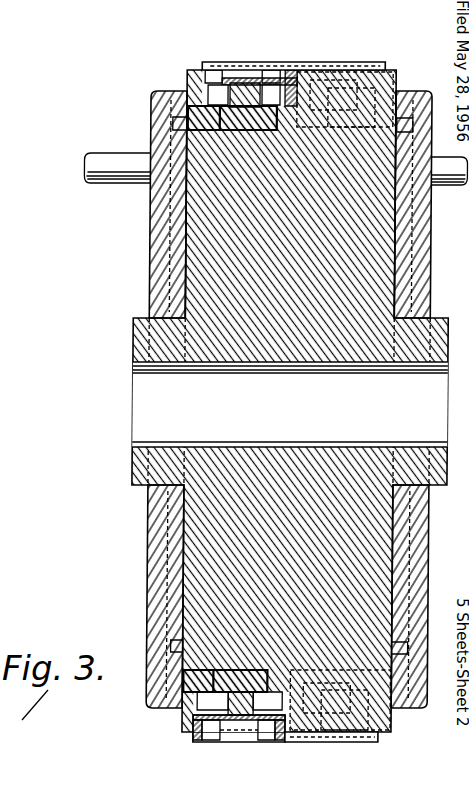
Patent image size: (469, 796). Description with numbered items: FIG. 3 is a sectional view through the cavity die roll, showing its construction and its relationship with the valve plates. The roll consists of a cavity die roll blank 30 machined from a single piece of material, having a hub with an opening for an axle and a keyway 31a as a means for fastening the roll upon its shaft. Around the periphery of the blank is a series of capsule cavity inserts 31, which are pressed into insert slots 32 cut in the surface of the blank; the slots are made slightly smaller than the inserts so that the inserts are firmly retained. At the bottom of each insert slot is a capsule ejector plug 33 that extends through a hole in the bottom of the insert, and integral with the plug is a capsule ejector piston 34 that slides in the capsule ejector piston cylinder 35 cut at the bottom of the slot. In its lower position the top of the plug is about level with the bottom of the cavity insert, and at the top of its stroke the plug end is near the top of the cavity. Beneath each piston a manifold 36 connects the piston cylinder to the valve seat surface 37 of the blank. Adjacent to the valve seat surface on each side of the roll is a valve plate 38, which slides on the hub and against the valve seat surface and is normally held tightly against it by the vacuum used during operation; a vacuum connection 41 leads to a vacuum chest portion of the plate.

The cavity die roll blank 30 is at (135, 340).
The capsule cavity insert 31 is at (358, 62).
The keyway 31a is at (143, 443).
The insert slot 32 is at (398, 83).
The capsule ejector plug 33 is at (268, 84).
The capsule ejector piston 34 is at (205, 113).
The capsule ejector piston cylinder 35 is at (205, 105).
The manifold 36 is at (188, 119).
The valve seat surface 37 is at (187, 155).
The valve plate 38 is at (151, 214).
The vacuum connection 41 is at (90, 155).